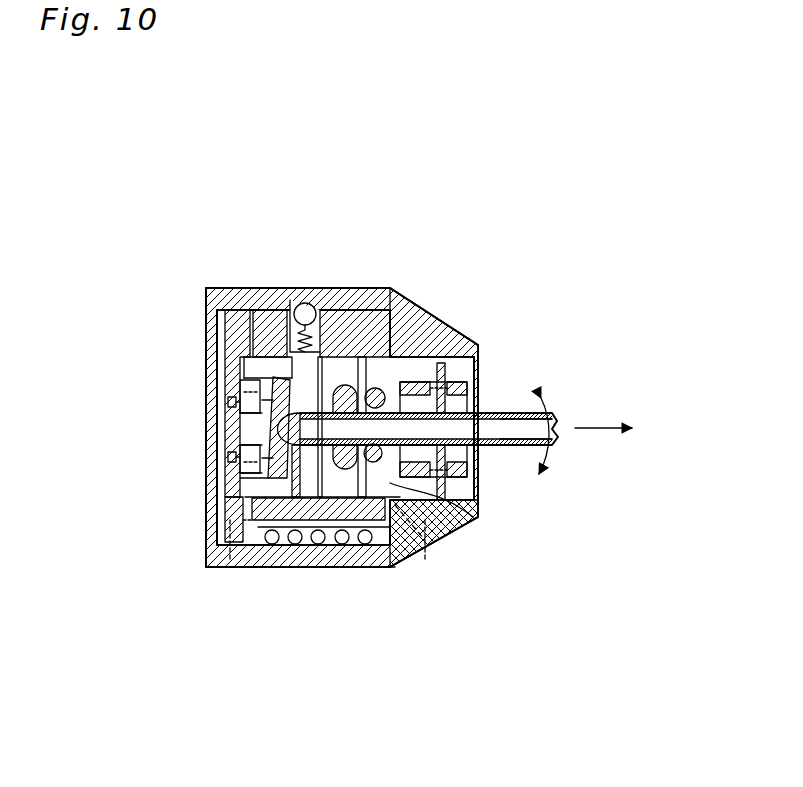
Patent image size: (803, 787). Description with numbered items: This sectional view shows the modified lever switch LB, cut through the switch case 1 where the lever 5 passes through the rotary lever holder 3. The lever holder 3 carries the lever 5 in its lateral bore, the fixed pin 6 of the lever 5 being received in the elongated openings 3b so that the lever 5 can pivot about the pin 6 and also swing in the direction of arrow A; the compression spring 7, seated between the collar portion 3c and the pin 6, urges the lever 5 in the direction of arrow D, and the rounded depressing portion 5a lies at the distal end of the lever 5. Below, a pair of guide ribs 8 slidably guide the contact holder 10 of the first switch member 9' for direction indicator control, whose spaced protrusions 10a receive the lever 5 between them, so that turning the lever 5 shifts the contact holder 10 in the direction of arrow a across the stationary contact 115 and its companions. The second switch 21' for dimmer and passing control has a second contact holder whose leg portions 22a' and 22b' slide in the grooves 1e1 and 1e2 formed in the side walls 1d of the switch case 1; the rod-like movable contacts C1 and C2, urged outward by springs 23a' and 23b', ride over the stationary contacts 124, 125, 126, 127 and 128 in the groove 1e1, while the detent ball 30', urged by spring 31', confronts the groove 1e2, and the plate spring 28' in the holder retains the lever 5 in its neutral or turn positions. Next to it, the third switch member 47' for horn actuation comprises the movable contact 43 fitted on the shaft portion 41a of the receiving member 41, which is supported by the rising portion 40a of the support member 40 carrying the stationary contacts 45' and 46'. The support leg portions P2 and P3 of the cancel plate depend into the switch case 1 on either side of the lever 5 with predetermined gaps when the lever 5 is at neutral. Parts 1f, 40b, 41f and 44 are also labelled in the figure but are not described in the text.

The modified lever switch LB is at (585, 190).
The switch case 1 is at (433, 287).
The side walls 1d is at (278, 330).
The groove 1e1 is at (385, 567).
The groove 1e2 is at (250, 382).
The housing plate 1f is at (222, 318).
The lever holder 3 is at (460, 385).
The elongated openings 3b is at (455, 372).
The collar portion 3c is at (440, 480).
The lever 5 is at (563, 417).
The rounded depressing portion 5a is at (235, 452).
The pin 6 is at (525, 415).
The compression spring 7 is at (405, 410).
The guide ribs 8 is at (245, 500).
The first switch member 9' is at (438, 317).
The contact holder 10 is at (453, 533).
The protrusions 10a is at (450, 360).
The second switch 21' is at (336, 619).
The leg portion 22a' is at (237, 586).
The leg portion 22b' is at (355, 288).
The spring 23a' is at (168, 565).
The spring 23b' is at (462, 555).
The plate spring 28' is at (436, 282).
The detent ball 30' is at (343, 231).
The spring 31' is at (388, 352).
The support member 40 is at (230, 330).
The rising portion 40a is at (235, 370).
The latch stop 40b is at (232, 440).
The receiving member 41 is at (230, 408).
The shaft portion 41a is at (232, 420).
The plate 41f is at (268, 348).
The movable contact 43 is at (240, 400).
The block 44 is at (262, 322).
The stationary contact 45' is at (170, 392).
The stationary contact 46' is at (148, 491).
The third switch member 47' is at (175, 502).
The stationary contact 115 is at (225, 520).
The stationary contact 124 is at (262, 548).
The stationary contact 125 is at (285, 548).
The stationary contact 126 is at (310, 548).
The stationary contact 127 is at (328, 548).
The stationary contact 128 is at (355, 548).
The movable contact C1 is at (235, 560).
The movable contact C2 is at (423, 560).
The support leg portion P2 is at (470, 392).
The support leg portion P3 is at (478, 460).
The arrow D is at (622, 412).
The double-headed arrow A is at (547, 453).
The double-headed arrow a is at (345, 360).